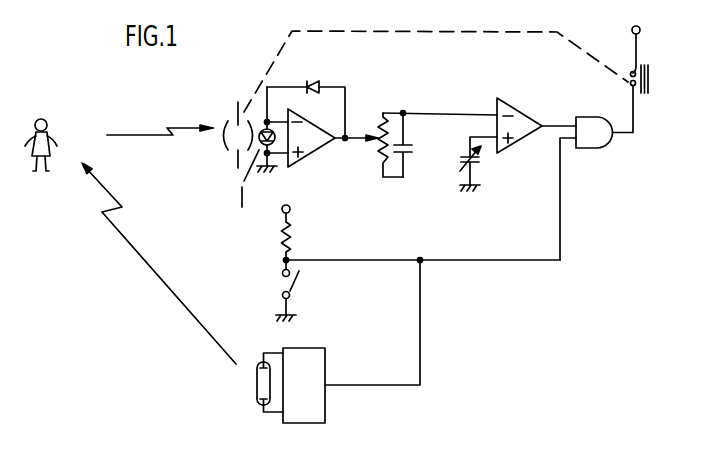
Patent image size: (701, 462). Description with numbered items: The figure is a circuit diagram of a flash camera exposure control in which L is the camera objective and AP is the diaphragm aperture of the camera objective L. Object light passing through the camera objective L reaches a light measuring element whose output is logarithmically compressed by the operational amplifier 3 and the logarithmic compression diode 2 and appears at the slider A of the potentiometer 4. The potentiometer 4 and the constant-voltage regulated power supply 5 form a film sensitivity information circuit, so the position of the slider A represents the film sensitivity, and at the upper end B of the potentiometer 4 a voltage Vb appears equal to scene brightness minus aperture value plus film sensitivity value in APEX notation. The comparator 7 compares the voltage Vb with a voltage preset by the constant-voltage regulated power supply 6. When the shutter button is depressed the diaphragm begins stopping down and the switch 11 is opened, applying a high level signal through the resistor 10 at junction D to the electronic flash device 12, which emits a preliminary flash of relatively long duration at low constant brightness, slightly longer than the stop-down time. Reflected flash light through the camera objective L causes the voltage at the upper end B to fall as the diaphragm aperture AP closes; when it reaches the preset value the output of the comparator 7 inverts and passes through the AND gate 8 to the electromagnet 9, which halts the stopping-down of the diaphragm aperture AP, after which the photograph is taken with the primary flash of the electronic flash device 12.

The diaphragm aperture AP is at (234, 108).
The camera objective L is at (229, 142).
The logarithmic compression diode 2 is at (313, 81).
The operational amplifier 3 is at (318, 155).
The potentiometer 4 is at (376, 141).
The slider A is at (366, 138).
The upper end B is at (403, 112).
The constant-voltage regulated power supply 5 is at (407, 152).
The constant-voltage regulated power supply 6 is at (458, 166).
The comparator 7 is at (519, 141).
The AND gate 8 is at (600, 139).
The electromagnet 9 is at (630, 72).
The resistor 10 is at (292, 231).
The junction D is at (411, 257).
The switch 11 is at (293, 281).
The electronic flash device 12 is at (325, 410).